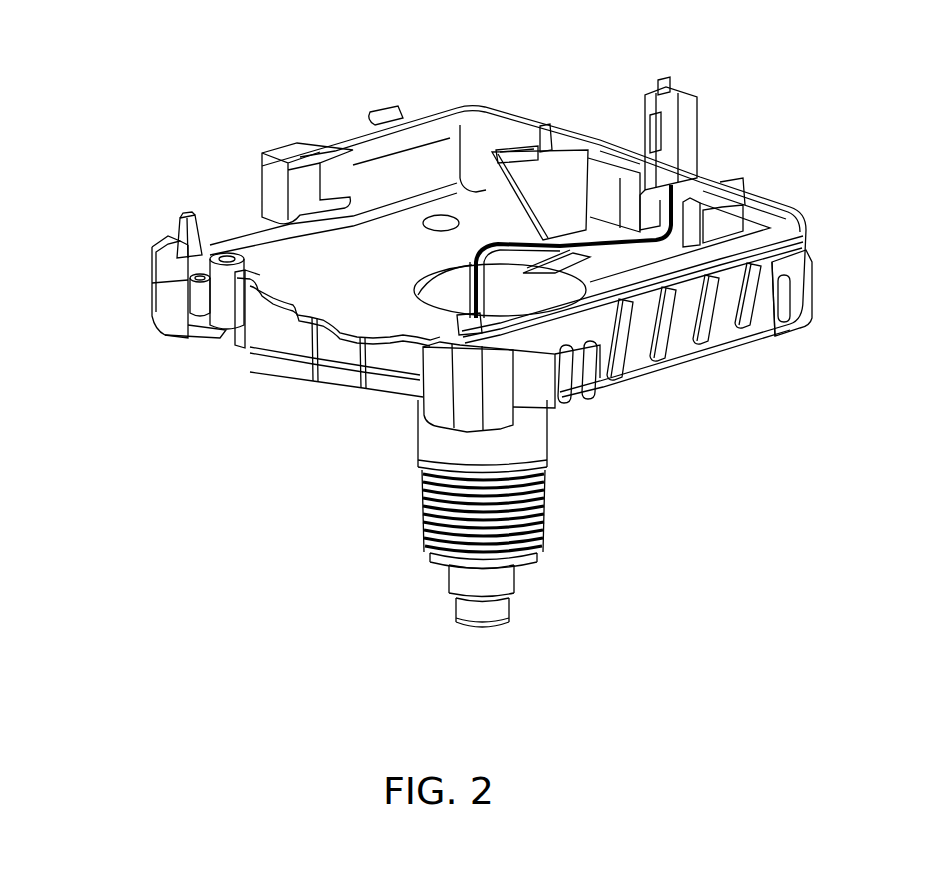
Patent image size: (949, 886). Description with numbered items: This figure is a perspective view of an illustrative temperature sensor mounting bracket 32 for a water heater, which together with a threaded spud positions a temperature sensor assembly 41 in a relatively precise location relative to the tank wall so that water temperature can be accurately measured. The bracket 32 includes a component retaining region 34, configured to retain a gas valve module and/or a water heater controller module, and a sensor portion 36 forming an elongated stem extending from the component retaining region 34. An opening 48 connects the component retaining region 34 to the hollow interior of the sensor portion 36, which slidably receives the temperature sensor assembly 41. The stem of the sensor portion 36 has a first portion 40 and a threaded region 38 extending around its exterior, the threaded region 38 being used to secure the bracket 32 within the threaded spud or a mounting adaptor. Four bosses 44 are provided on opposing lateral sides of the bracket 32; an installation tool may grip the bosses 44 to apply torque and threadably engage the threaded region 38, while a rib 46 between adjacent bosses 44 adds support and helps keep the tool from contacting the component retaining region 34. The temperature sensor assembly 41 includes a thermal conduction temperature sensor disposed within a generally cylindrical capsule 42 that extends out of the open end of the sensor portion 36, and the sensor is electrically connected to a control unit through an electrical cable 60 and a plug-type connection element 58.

The temperature sensor mounting bracket 32 is at (820, 102).
The component retaining region 34 is at (287, 272).
The sensor portion 36 is at (400, 500).
The threaded region 38 is at (533, 512).
The first portion 40 is at (425, 442).
The temperature sensor assembly 41 is at (528, 578).
The capsule 42 is at (503, 608).
The bosses 44 is at (378, 118).
The rib 46 is at (663, 363).
The opening 48 is at (462, 275).
The connection element 58 is at (697, 153).
The electrical cable 60 is at (483, 245).